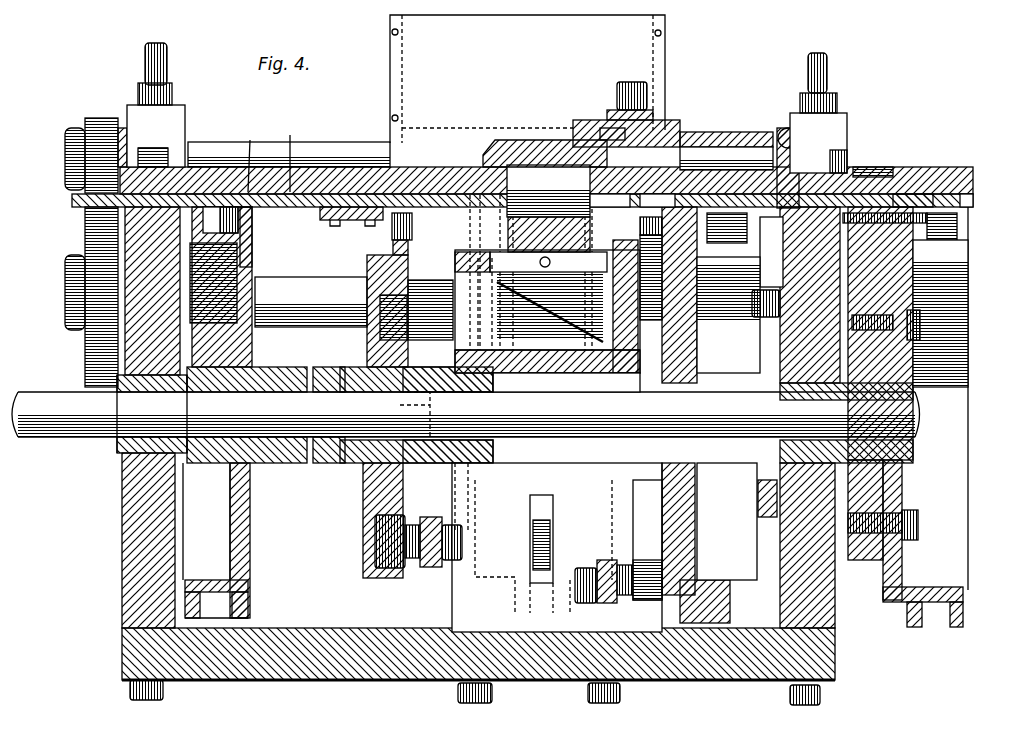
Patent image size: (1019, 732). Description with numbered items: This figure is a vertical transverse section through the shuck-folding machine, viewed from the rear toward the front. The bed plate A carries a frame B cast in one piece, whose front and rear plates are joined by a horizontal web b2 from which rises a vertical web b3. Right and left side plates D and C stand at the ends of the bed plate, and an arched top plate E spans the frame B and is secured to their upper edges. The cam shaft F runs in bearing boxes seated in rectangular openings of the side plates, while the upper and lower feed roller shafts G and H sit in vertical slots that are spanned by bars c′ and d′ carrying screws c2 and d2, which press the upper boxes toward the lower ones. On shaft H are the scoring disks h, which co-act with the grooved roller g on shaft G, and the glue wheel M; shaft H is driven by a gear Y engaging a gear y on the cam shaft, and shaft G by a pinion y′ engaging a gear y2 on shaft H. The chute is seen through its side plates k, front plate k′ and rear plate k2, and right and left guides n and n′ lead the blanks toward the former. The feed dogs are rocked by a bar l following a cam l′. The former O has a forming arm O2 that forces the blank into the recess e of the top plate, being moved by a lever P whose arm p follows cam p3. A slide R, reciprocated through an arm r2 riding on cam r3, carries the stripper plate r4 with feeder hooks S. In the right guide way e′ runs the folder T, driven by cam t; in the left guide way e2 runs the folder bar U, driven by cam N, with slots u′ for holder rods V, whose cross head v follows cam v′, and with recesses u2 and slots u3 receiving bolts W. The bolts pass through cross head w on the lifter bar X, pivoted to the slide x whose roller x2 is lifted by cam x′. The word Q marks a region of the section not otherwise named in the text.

The bed plate A is at (389, 628).
The frame B is at (557, 546).
The left side plate C is at (817, 545).
The right side plate D is at (122, 522).
The top plate E is at (346, 190).
The cam shaft F is at (466, 414).
The upper feed roller shaft G is at (210, 146).
The lower feed roller shaft H is at (308, 292).
The glue wheel M is at (378, 242).
The cam N is at (705, 604).
The former O is at (548, 262).
The forming arm O2 is at (548, 208).
The lever P is at (530, 537).
The lower bearing cavity Q is at (700, 548).
The slide R is at (550, 307).
The feeder hooks S is at (557, 274).
The folder T is at (289, 152).
The left folder bar U is at (700, 135).
The holder rods V is at (900, 194).
The bolts W is at (602, 126).
The lifter bar X is at (576, 128).
The gear Y is at (877, 167).
The horizontal web b2 is at (530, 352).
The vertical web b3 is at (638, 306).
The bar c′ is at (847, 124).
The screw c2 is at (828, 78).
The bar d′ is at (185, 116).
The screw d2 is at (168, 72).
The rectangular recess e is at (480, 150).
The right guide way e′ is at (247, 154).
The left guide way e2 is at (744, 150).
The roller g is at (492, 128).
The scoring disks h is at (645, 376).
The side plates of chute k is at (566, 382).
The front plate of chute k′ is at (668, 295).
The rear plate of chute k2 is at (527, 79).
The bar l is at (430, 367).
The cam l′ is at (461, 496).
The right guide n is at (435, 245).
The left guide n′ is at (653, 227).
The arm p is at (428, 568).
The cam p3 is at (375, 532).
The arm r2 is at (604, 560).
The cam r3 is at (647, 540).
The plate r4 is at (490, 304).
The cam t is at (262, 252).
The transverse slots u′ is at (924, 195).
The rectangular recesses u2 is at (610, 191).
The slots u3 is at (657, 191).
The cross head v is at (974, 207).
The cam v′ is at (966, 240).
The cross head w is at (650, 111).
The slide x is at (800, 160).
The cam x′ is at (760, 517).
The anti-friction roller x2 is at (790, 295).
The gear y is at (906, 514).
The pinion y′ is at (100, 118).
The gear y2 is at (85, 240).